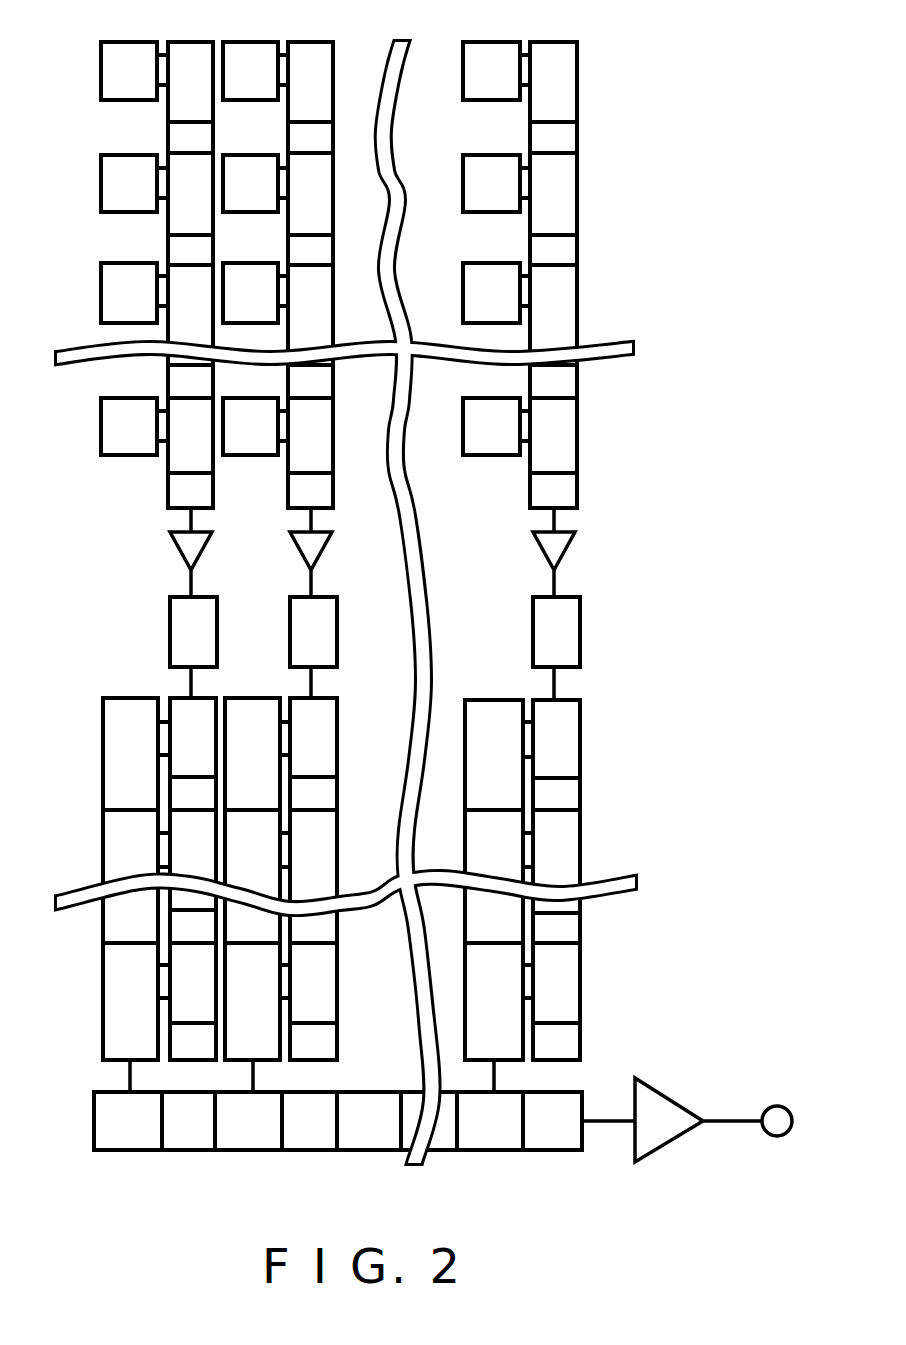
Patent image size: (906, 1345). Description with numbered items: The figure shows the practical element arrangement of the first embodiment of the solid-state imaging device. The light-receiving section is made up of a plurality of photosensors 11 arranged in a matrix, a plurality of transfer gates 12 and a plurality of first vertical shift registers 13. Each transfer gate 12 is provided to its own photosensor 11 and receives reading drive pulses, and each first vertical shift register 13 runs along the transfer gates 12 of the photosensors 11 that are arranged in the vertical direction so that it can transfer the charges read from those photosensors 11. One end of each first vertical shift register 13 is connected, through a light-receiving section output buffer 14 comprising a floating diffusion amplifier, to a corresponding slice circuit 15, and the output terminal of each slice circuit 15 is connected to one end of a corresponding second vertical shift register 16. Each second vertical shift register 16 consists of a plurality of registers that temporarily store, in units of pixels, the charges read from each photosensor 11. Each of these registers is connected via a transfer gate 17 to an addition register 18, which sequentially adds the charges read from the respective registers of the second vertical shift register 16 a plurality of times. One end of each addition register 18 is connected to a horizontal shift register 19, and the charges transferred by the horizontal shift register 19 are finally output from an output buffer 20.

The photosensor 11 is at (128, 40).
The transfer gate 12 is at (162, 40).
The first vertical shift register 13 is at (206, 41).
The light-receiving section output buffer 14 is at (170, 545).
The slice circuit 15 is at (170, 614).
The second vertical shift register 16 is at (205, 698).
The transfer gate 17 is at (164, 698).
The addition register 18 is at (103, 740).
The horizontal shift register 19 is at (186, 1152).
The output buffer 20 is at (662, 1090).